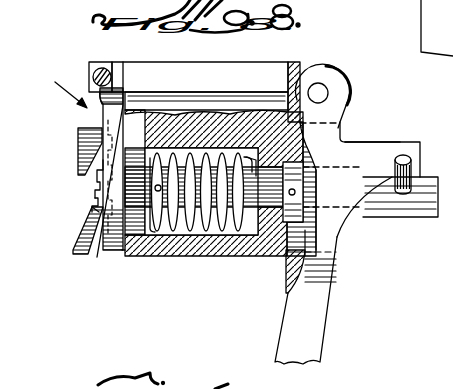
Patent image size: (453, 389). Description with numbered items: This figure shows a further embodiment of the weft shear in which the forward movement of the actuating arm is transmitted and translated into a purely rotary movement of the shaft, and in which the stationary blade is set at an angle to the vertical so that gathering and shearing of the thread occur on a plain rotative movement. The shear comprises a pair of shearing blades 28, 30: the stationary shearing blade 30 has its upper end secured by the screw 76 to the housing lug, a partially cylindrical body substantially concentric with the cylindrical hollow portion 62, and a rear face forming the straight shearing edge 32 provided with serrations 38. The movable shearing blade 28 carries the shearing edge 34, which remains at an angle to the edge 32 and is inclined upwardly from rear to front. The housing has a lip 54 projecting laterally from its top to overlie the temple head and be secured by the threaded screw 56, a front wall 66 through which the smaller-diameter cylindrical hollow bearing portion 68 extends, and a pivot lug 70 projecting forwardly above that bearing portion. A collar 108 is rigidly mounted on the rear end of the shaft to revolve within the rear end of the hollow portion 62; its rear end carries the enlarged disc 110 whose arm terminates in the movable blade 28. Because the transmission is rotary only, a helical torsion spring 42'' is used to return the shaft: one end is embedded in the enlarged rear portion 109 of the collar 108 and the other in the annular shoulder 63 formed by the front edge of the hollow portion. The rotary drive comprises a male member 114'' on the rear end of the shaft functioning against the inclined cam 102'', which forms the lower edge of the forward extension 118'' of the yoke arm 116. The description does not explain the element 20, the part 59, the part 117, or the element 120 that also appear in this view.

The clutch mechanism 20 is at (57, 88).
The movable shearing blade 28 is at (100, 135).
The stationary shearing blade 30 is at (95, 230).
The straight shearing edge 32 is at (92, 204).
The shearing edge 34 is at (85, 163).
The serrations 38 is at (95, 189).
The helical torsion spring 42'' is at (192, 232).
The lip 54 is at (175, 78).
The threaded screw 56 is at (380, 210).
The operating lever 59 is at (312, 302).
The cylindrical hollow portion 62 is at (190, 258).
The annular shoulder 63 is at (258, 258).
The front wall 66 is at (255, 176).
The cylindrical hollow bearing portion 68 is at (235, 112).
The pivot lug 70 is at (300, 68).
The screw 76 is at (100, 70).
The inclined cam 102'' is at (257, 187).
The collar 108 is at (143, 257).
The enlarged rear portion 109 is at (127, 262).
The enlarged disc 110 is at (98, 256).
The male member 114'' is at (376, 172).
The yoke arm 116 is at (343, 140).
The lug 117 is at (338, 122).
The forward extension 118'' is at (383, 129).
The pivot hole 120 is at (322, 92).